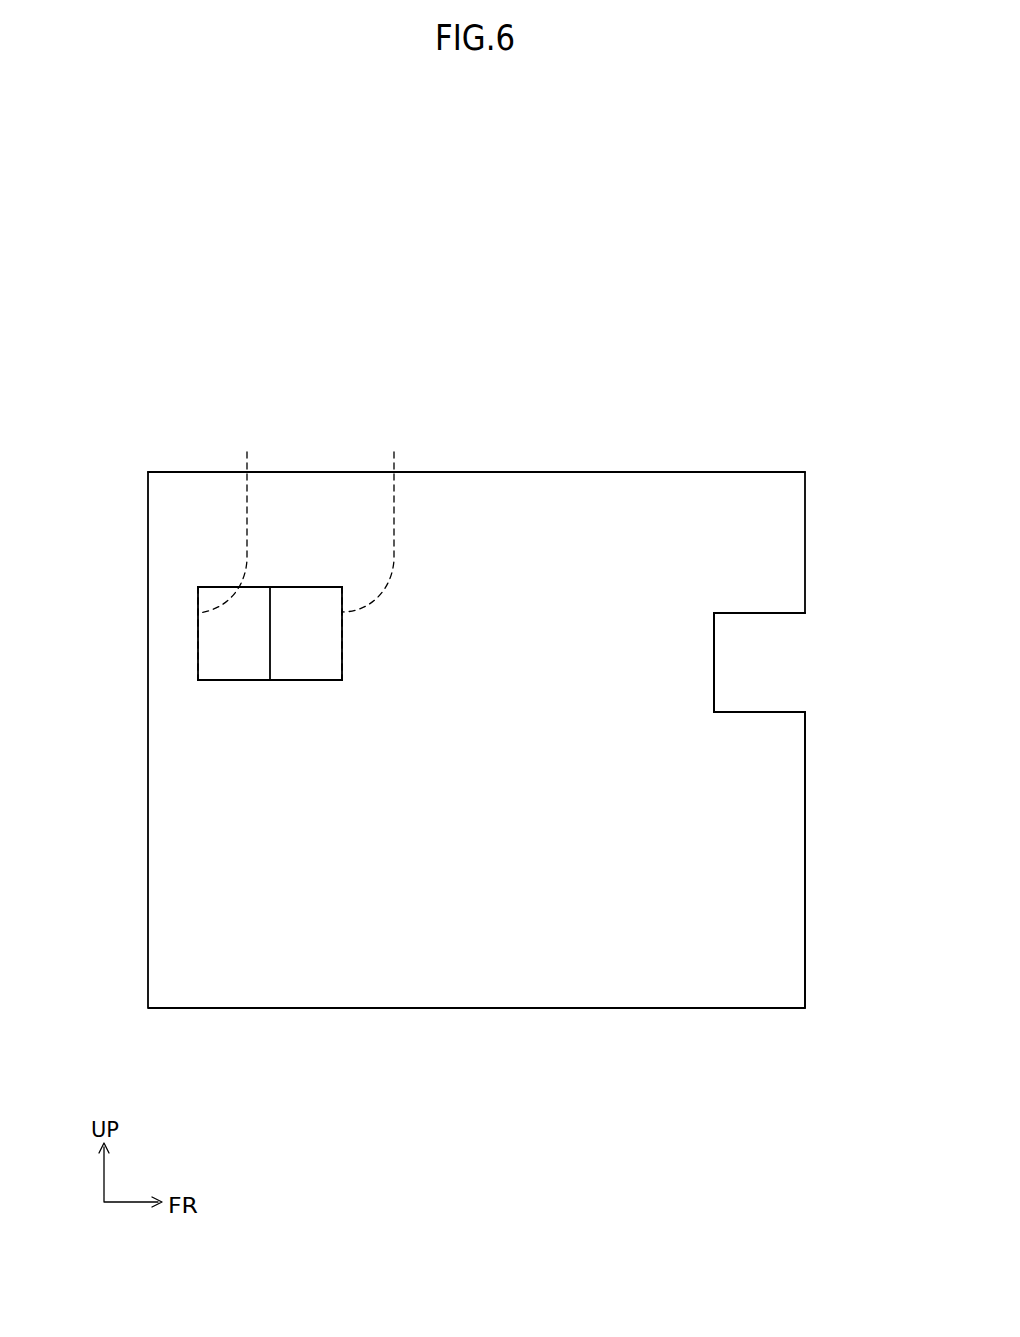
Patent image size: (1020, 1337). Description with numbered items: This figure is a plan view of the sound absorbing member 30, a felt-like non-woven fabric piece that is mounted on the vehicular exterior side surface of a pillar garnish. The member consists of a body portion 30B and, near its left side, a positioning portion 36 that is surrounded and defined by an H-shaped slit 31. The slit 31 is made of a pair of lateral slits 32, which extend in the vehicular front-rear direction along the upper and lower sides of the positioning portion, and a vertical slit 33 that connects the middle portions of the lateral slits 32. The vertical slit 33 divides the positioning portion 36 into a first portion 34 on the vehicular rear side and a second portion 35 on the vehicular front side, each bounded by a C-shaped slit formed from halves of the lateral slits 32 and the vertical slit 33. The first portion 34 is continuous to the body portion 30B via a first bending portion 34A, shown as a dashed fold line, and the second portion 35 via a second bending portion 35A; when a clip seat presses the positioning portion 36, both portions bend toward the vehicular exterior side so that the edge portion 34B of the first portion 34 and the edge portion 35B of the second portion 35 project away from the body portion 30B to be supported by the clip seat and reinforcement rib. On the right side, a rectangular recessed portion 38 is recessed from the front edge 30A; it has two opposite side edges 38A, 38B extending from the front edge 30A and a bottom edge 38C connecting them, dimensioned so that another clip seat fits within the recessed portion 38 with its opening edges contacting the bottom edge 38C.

The sound absorbing member 30 is at (689, 455).
The front edge 30A is at (805, 923).
The body portion 30B is at (547, 560).
The slit 31 is at (87, 515).
The lateral slits 32 is at (222, 587).
The vertical slit 33 is at (270, 628).
The first portion 34 is at (253, 598).
The first bending portion 34A is at (231, 519).
The edge portion 34B is at (256, 680).
The second portion 35 is at (306, 598).
The second bending portion 35A is at (382, 518).
The edge portion 35B is at (290, 680).
The positioning portion 36 is at (347, 385).
The recessed portion 38 is at (755, 712).
The side edge 38A is at (760, 614).
The side edge 38B is at (785, 712).
The bottom edge 38C is at (714, 656).